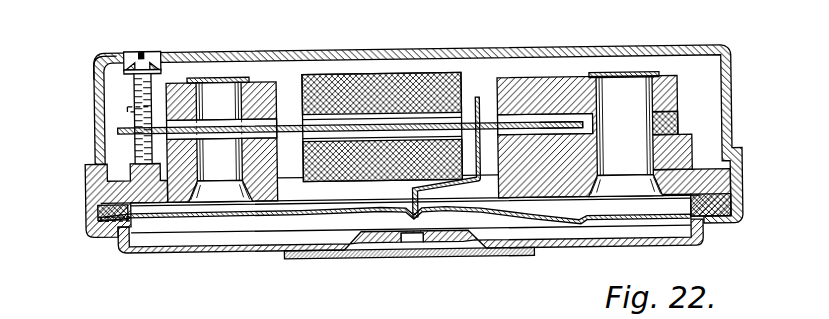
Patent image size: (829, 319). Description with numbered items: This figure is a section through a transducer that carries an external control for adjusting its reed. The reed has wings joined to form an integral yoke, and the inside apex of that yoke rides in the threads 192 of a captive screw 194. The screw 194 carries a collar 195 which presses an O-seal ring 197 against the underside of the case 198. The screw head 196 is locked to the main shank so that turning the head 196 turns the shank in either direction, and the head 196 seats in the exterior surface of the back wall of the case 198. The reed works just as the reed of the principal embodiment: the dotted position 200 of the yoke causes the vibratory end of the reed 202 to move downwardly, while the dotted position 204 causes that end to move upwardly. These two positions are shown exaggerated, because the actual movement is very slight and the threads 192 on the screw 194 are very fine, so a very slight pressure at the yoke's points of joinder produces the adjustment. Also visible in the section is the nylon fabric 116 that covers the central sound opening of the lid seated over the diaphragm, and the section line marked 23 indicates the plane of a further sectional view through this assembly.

The coil / section line 23- 23 is at (417, 86).
The nylon fabric 116 is at (488, 251).
The threads 192 is at (120, 126).
The captive screw 194 is at (120, 76).
The collar 195 is at (108, 57).
The screw head 196 is at (143, 49).
The O-seal ring 197 is at (161, 60).
The case 198 is at (277, 47).
The dotted position 200 is at (128, 103).
The vibratory end of the reed 202 is at (571, 123).
The dotted position 204 is at (85, 198).